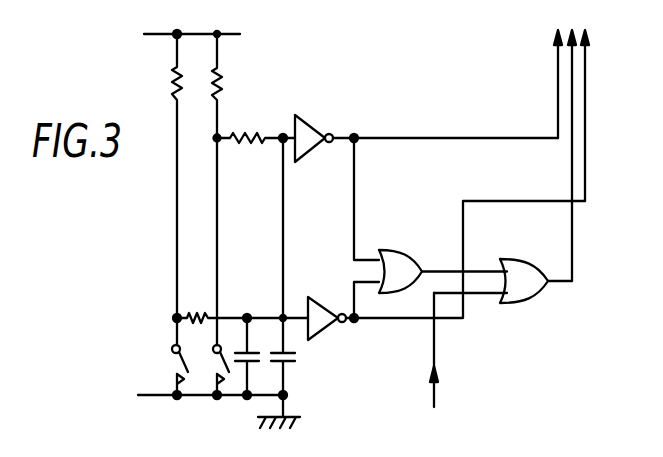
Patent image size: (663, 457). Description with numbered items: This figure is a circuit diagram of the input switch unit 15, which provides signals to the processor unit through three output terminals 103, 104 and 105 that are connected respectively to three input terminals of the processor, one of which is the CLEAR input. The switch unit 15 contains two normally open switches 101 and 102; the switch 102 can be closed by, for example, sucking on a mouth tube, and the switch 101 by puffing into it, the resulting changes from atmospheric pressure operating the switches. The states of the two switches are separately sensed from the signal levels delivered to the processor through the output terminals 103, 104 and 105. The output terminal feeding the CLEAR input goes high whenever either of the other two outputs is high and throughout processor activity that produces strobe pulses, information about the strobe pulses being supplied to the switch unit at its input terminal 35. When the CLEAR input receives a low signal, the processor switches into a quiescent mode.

The input switch unit 15 is at (365, 105).
The input terminal 35 is at (432, 392).
The normally open switch 101 is at (172, 361).
The normally open switch 102 is at (221, 362).
The output terminal 103 is at (557, 60).
The output terminal 104 is at (571, 78).
The output terminal 105 is at (585, 88).